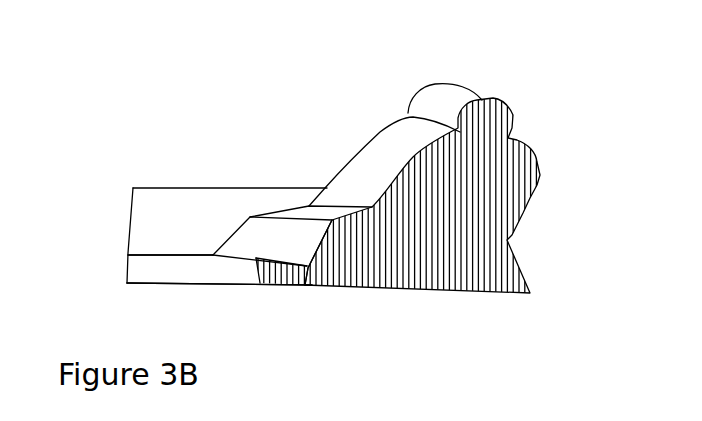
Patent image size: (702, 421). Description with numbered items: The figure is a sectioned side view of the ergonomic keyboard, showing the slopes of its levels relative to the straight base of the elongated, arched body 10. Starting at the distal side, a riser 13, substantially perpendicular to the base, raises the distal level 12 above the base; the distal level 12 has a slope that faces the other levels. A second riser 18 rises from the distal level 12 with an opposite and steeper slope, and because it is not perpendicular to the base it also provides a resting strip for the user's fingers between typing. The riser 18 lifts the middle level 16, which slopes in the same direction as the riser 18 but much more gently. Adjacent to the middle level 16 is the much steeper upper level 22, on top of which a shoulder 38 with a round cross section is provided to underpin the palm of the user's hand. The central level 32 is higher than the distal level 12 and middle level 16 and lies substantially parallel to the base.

The body 10 is at (477, 216).
The distal level 12 is at (283, 283).
The riser 13 is at (187, 270).
The middle level 16 is at (306, 218).
The riser 18 is at (305, 247).
The upper level 22 is at (362, 160).
The central level 32 is at (170, 184).
The shoulder 38 is at (452, 95).